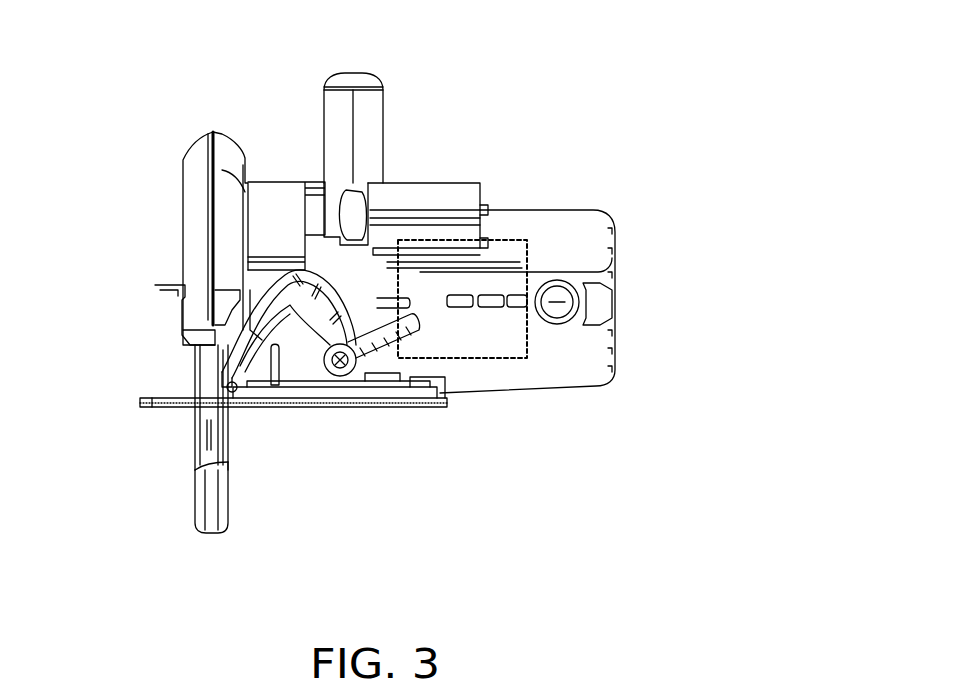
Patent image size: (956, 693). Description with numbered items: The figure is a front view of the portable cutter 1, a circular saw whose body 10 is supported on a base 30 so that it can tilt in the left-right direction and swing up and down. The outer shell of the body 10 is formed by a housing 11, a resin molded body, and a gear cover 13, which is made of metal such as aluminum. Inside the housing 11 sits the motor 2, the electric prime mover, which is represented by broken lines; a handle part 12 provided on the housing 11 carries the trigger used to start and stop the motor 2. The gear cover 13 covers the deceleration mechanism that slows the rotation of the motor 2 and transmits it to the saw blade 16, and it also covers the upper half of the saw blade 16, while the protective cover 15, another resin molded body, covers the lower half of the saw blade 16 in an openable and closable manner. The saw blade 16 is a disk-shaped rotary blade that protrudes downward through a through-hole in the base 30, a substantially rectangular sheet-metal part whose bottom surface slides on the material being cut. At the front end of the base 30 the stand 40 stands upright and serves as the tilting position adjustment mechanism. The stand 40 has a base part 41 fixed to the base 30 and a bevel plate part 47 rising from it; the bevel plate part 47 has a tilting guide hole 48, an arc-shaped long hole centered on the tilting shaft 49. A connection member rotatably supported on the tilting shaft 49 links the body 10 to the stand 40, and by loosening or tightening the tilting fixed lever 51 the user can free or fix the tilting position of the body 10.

The portable cutter 1 is at (661, 595).
The motor 2 is at (497, 238).
The body 10 is at (612, 207).
The housing 11 is at (535, 218).
The handle part 12 is at (363, 73).
The gear cover 13 is at (198, 140).
The protective cover 15 is at (196, 530).
The saw blade 16 is at (192, 446).
The base 30 is at (140, 412).
The stand 40 is at (398, 401).
The base part 41 is at (358, 392).
The bevel plate part 47 is at (313, 375).
The tilting guide hole 48 is at (313, 307).
The tilting shaft 49 is at (236, 395).
The tilting fixed lever 51 is at (417, 320).